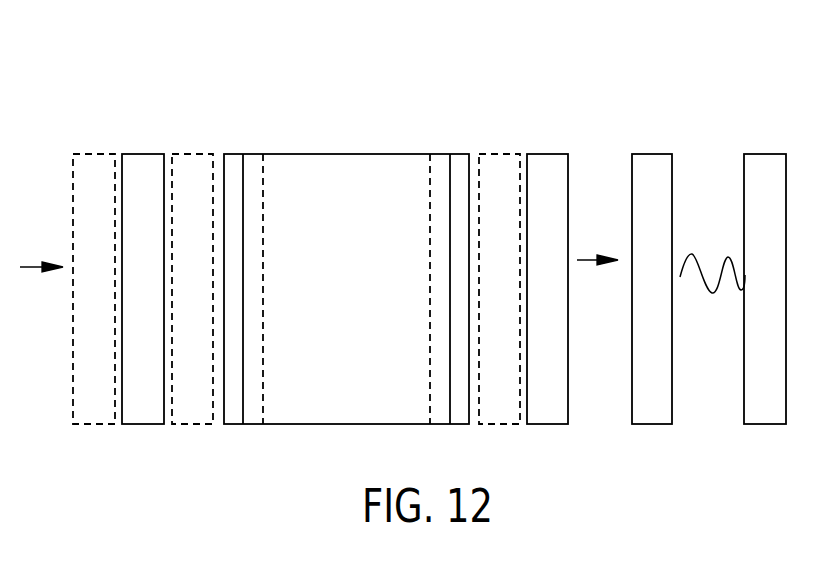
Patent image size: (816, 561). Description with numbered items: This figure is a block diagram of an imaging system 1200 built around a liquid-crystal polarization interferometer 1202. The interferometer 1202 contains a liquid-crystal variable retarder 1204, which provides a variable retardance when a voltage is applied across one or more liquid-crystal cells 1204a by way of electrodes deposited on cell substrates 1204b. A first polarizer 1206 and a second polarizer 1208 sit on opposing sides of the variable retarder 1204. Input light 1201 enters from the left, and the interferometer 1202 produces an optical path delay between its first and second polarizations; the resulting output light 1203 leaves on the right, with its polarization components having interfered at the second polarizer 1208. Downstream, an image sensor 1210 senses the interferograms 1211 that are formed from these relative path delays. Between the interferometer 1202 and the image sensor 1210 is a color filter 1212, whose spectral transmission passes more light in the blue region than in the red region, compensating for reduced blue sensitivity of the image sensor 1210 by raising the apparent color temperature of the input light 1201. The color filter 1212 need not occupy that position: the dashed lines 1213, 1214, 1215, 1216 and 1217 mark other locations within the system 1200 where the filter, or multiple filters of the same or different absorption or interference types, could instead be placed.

The imaging system 1200 is at (693, 82).
The input light 1201 is at (32, 268).
The liquid-crystal polarization interferometer 1202 is at (585, 87).
The output light 1203 is at (588, 262).
The liquid-crystal variable retarder 1204 is at (465, 147).
The liquid-crystal cell 1204a is at (355, 412).
The cell substrate 1204b is at (228, 412).
The first polarizer 1206 is at (146, 153).
The second polarizer 1208 is at (557, 153).
The image sensor 1210 is at (764, 153).
The interferogram 1211 is at (702, 286).
The color filter 1212 is at (645, 153).
The dashed line 1213 is at (100, 153).
The dashed line 1214 is at (200, 152).
The dashed line 1215 is at (503, 151).
The dashed line 1216 is at (255, 416).
The dashed line 1217 is at (437, 412).